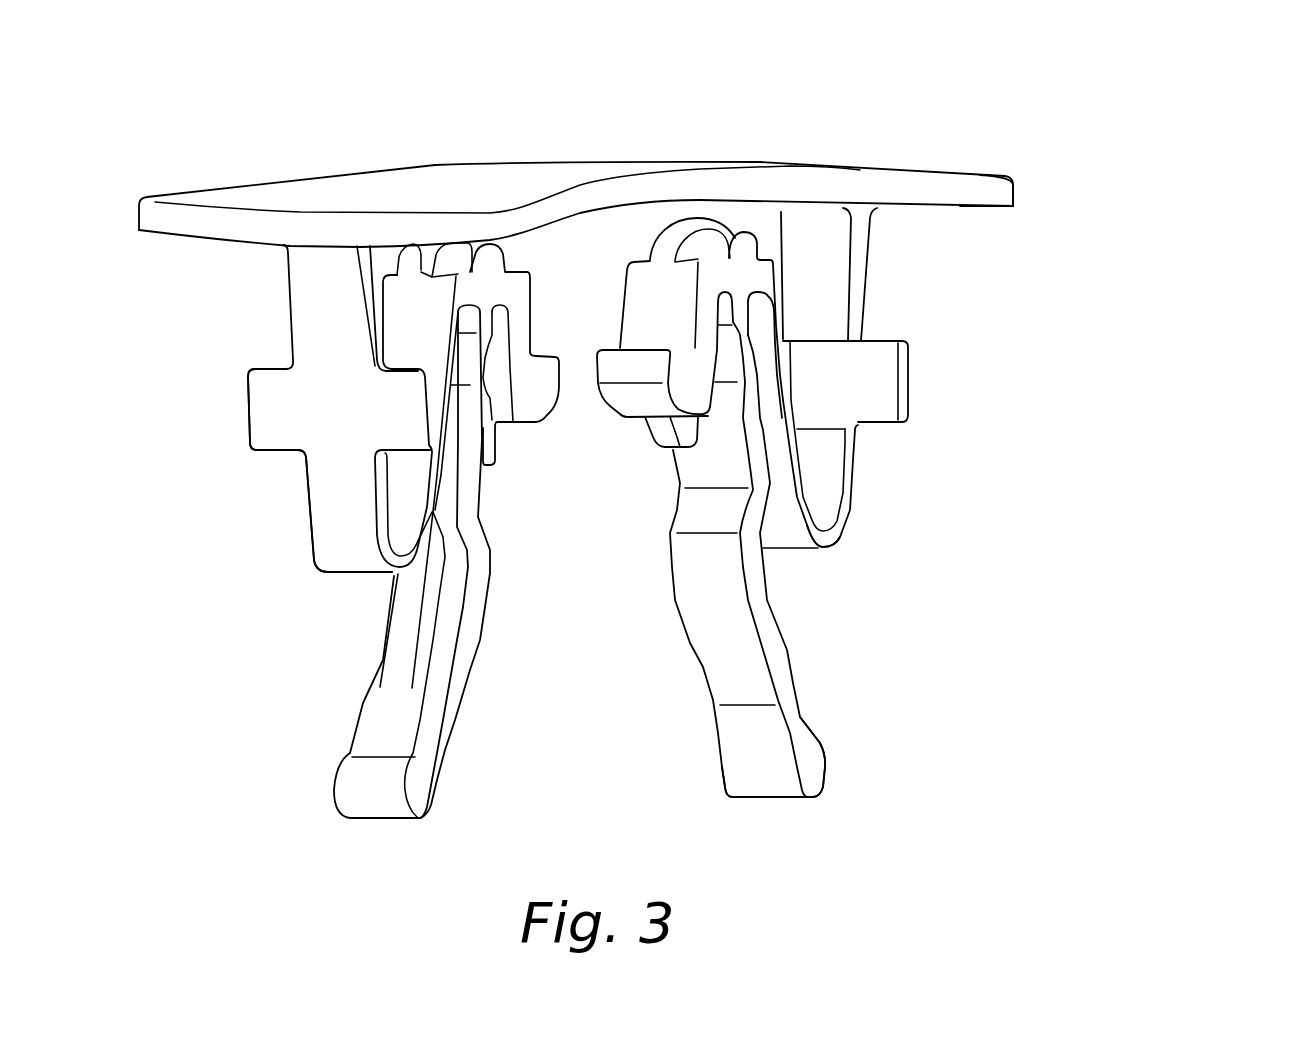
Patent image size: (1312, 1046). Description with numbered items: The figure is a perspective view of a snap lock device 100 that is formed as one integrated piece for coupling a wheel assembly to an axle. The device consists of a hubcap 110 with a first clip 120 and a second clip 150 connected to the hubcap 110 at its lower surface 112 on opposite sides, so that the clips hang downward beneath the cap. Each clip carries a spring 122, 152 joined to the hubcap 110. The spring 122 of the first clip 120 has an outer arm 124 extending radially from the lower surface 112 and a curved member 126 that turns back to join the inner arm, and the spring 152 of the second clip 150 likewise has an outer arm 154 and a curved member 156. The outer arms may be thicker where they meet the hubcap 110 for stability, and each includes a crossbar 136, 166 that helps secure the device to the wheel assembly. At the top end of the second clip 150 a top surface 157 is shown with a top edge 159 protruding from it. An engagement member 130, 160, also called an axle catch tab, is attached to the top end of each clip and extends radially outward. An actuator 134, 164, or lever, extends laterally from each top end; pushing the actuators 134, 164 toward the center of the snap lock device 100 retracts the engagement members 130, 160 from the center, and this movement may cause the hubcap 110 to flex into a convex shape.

The snap lock device 100 is at (1112, 160).
The hubcap 110 is at (432, 178).
The lower surface 112 is at (943, 208).
The first clip 120 is at (380, 671).
The spring 122 is at (297, 303).
The outer arm 124 is at (307, 480).
The curved member 126 is at (317, 555).
The engagement member 130 is at (513, 432).
The actuator 134 is at (340, 801).
The crossbar 136 is at (245, 398).
The second clip 150 is at (792, 657).
The spring 152 is at (862, 306).
The outer arm 154 is at (851, 475).
The curved member 156 is at (837, 537).
The top surface 157 is at (745, 236).
The top edge 159 is at (667, 250).
The engagement member 160 is at (625, 418).
The actuator 164 is at (822, 760).
The crossbar 166 is at (907, 407).